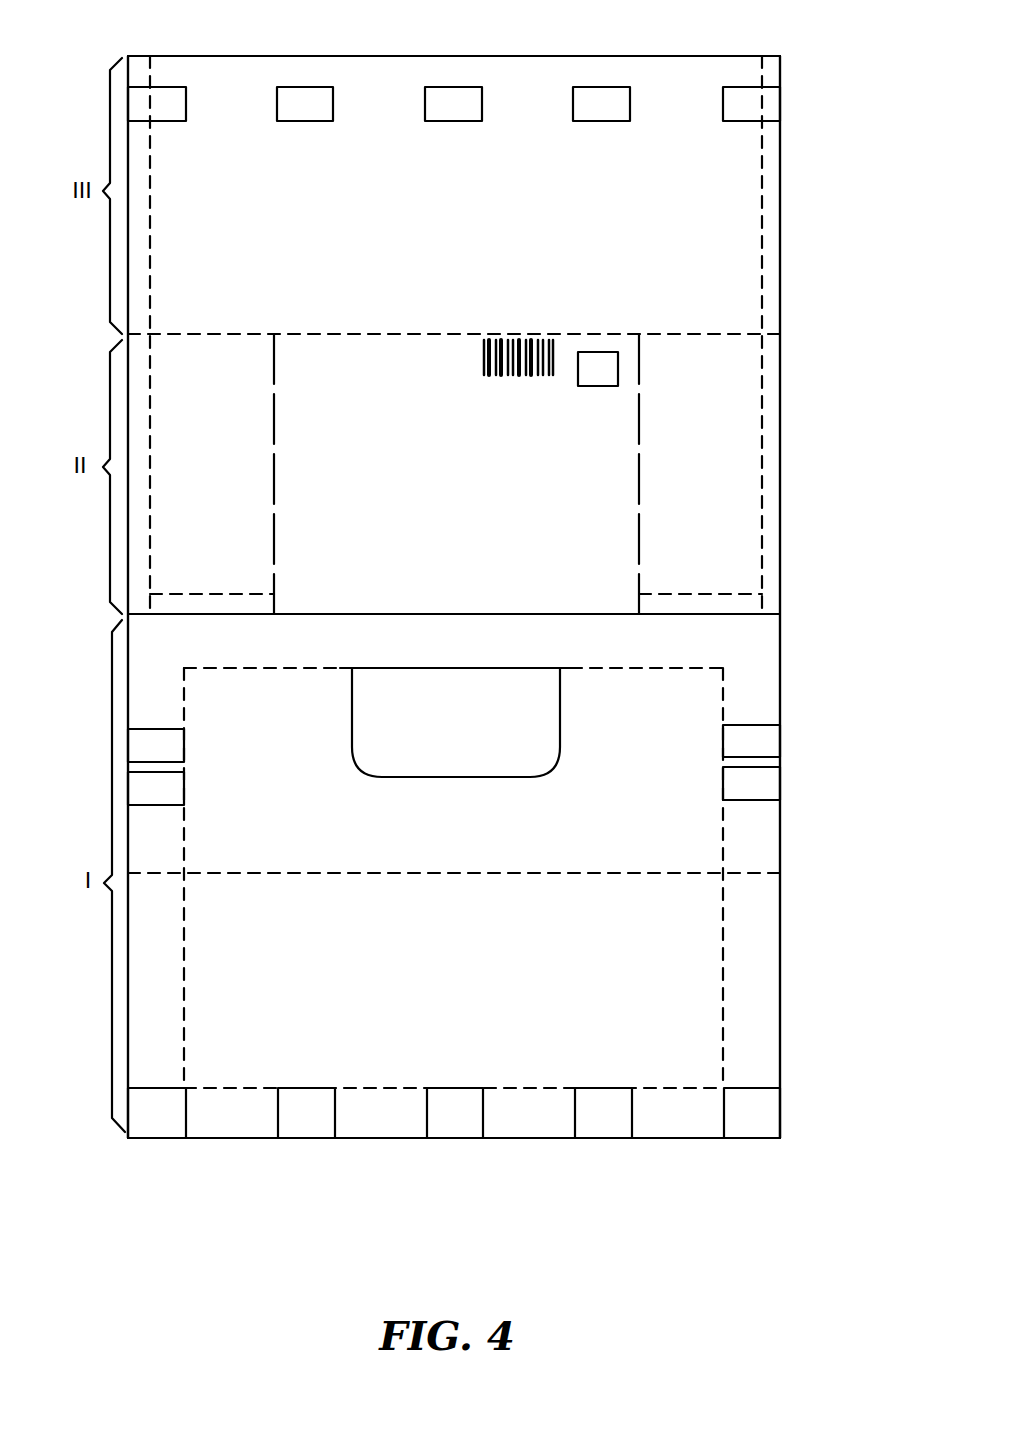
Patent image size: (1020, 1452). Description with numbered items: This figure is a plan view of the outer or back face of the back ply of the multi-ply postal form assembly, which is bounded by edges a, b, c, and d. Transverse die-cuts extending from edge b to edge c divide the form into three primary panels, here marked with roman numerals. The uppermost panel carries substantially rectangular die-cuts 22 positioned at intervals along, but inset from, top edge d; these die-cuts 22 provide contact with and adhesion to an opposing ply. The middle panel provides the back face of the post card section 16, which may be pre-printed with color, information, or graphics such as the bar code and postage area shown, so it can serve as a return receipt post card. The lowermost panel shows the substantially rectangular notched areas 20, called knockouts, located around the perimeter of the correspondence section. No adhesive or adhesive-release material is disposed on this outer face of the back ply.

The post card section 16 is at (557, 500).
The notched areas 20 is at (135, 788).
The die-cuts 22 is at (173, 105).
The edge a is at (687, 1138).
The edge b is at (128, 983).
The edge c is at (781, 949).
The top edge d is at (558, 55).